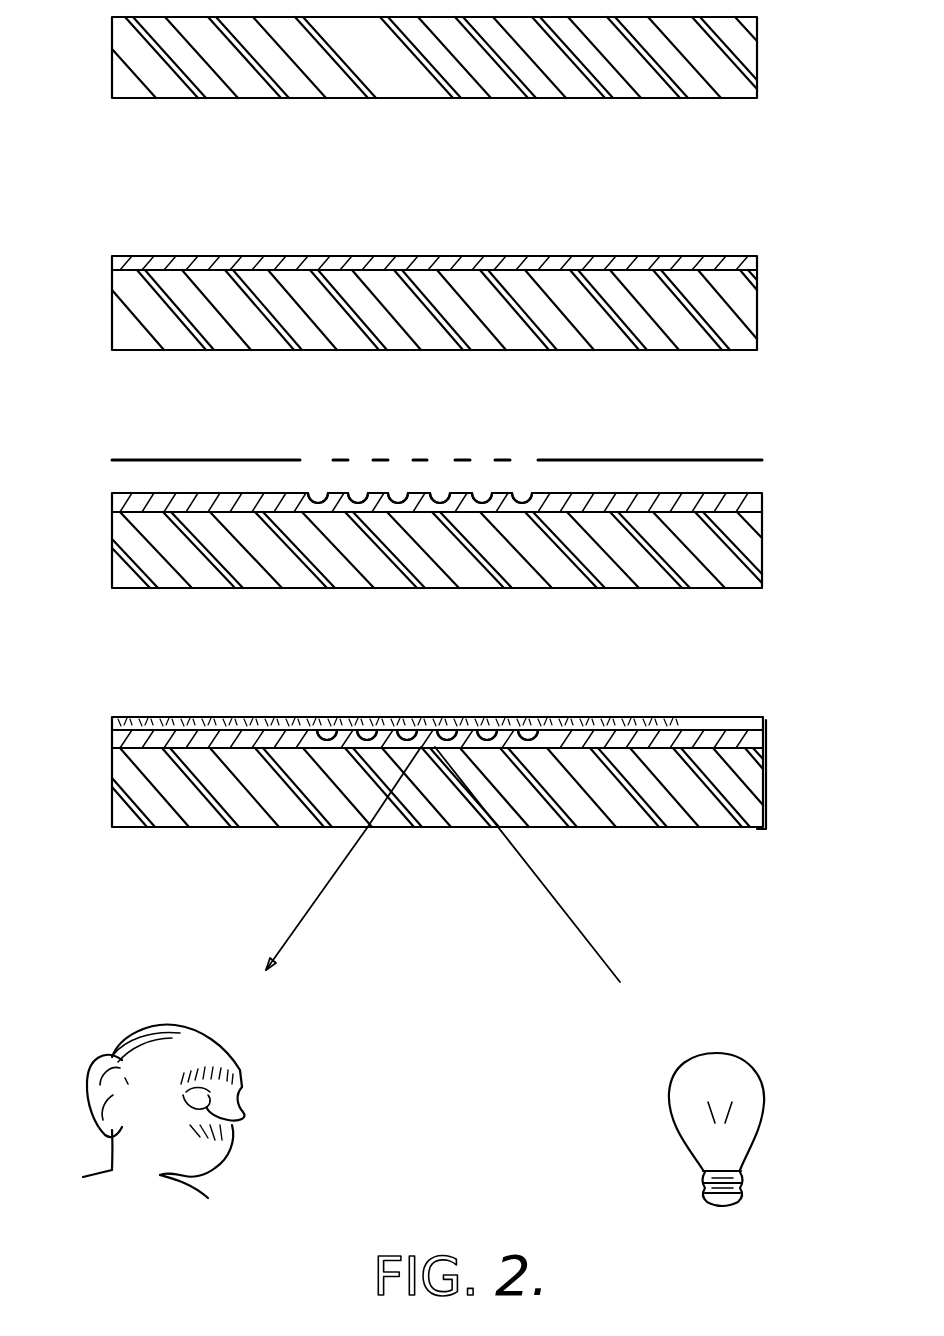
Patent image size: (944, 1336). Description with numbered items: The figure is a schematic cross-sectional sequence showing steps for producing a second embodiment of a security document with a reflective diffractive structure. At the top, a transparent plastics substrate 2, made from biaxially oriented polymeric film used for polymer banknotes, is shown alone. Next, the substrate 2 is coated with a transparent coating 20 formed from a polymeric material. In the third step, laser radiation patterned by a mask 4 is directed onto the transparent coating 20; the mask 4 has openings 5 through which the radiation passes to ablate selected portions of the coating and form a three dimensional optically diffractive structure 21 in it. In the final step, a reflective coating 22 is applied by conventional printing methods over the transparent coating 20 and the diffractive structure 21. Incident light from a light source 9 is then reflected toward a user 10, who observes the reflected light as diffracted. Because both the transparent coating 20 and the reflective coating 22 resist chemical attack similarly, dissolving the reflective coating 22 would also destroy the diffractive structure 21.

The substrate 2 is at (756, 84).
The transparent coating 20 is at (690, 256).
The optically diffractive structure 21 is at (292, 488).
The reflective coating 22 is at (763, 718).
The mask 4 is at (132, 452).
The mask openings 5 is at (365, 457).
The light source 9 is at (693, 1088).
The user 10 is at (243, 1090).